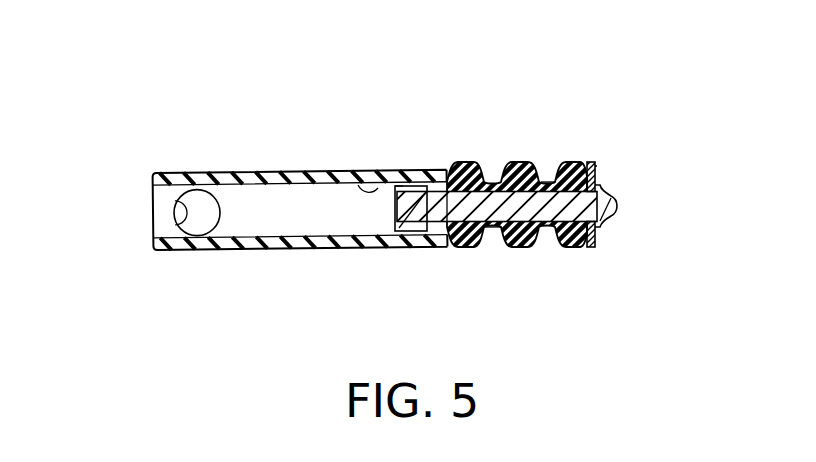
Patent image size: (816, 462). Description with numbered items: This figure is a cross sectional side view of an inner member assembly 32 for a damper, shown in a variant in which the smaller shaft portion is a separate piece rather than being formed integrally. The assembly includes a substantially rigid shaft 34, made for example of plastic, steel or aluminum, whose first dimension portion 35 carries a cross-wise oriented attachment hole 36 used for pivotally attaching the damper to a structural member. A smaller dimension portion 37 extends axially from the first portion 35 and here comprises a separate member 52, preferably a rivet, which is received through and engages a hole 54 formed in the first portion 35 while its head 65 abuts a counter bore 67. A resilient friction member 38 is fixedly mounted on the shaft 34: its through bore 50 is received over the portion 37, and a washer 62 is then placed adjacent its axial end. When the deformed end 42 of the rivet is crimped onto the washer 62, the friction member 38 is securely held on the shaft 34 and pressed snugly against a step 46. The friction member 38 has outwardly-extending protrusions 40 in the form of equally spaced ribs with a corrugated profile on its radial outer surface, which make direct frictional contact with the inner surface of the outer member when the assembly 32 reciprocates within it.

The inner member assembly 32 is at (350, 260).
The shaft 34 is at (218, 252).
The first dimension portion 35 is at (279, 226).
The second cross-wise oriented attachment hole 36 is at (175, 222).
The smaller dimension portion 37 is at (487, 218).
The resilient friction member 38 is at (586, 156).
The outwardly-extending protrusion 40 is at (454, 165).
The deformed end 42 is at (622, 231).
The step 46 is at (452, 234).
The through bore 50 is at (549, 183).
The separate member 52 is at (484, 232).
The hole 54 is at (430, 184).
The washer 62 is at (597, 167).
The head 65 is at (400, 180).
The counter bore 67 is at (358, 185).